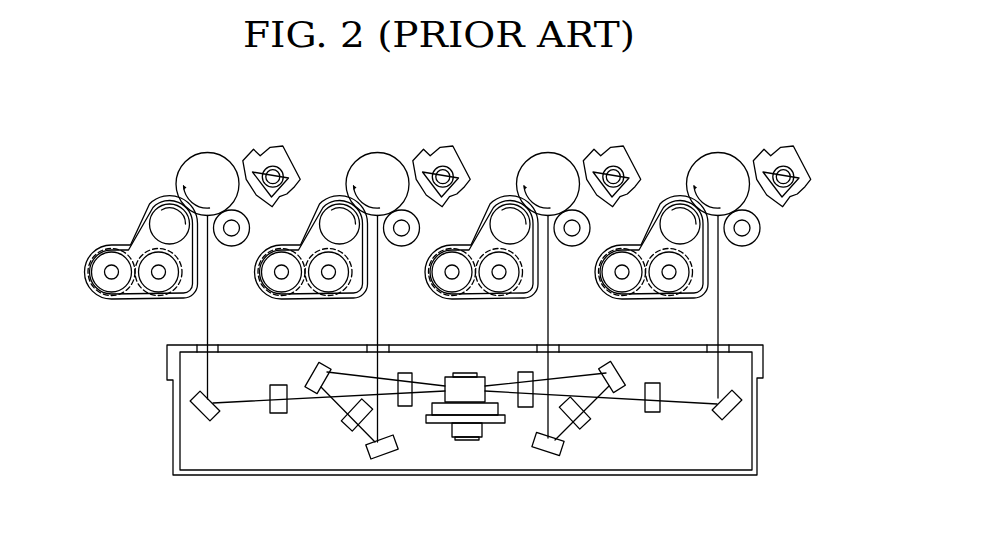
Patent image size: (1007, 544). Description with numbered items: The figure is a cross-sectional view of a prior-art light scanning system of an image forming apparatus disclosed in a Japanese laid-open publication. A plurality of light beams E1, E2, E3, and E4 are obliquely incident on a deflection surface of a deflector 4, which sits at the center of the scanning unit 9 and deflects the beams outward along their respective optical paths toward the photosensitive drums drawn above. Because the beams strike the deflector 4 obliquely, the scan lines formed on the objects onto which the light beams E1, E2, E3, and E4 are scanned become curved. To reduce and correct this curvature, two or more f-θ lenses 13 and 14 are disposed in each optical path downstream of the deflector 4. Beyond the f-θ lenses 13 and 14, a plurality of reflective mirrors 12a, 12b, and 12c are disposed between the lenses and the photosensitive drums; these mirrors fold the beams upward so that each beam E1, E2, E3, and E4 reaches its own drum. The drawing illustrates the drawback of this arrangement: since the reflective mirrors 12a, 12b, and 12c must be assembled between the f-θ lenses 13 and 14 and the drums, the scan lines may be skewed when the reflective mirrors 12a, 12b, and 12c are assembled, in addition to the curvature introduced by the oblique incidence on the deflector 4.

The light beam E1 is at (703, 272).
The light beam E2 is at (533, 292).
The light beam E3 is at (363, 294).
The light beam E4 is at (193, 272).
The laser scanning unit housing 9 is at (242, 471).
The deflector 4 is at (443, 410).
The f-θ lens 13 is at (522, 372).
The reflective mirror 12a is at (737, 409).
The reflective mirror 12b is at (614, 363).
The reflective mirror 12c is at (548, 452).
The f-θ lens 14 is at (652, 412).